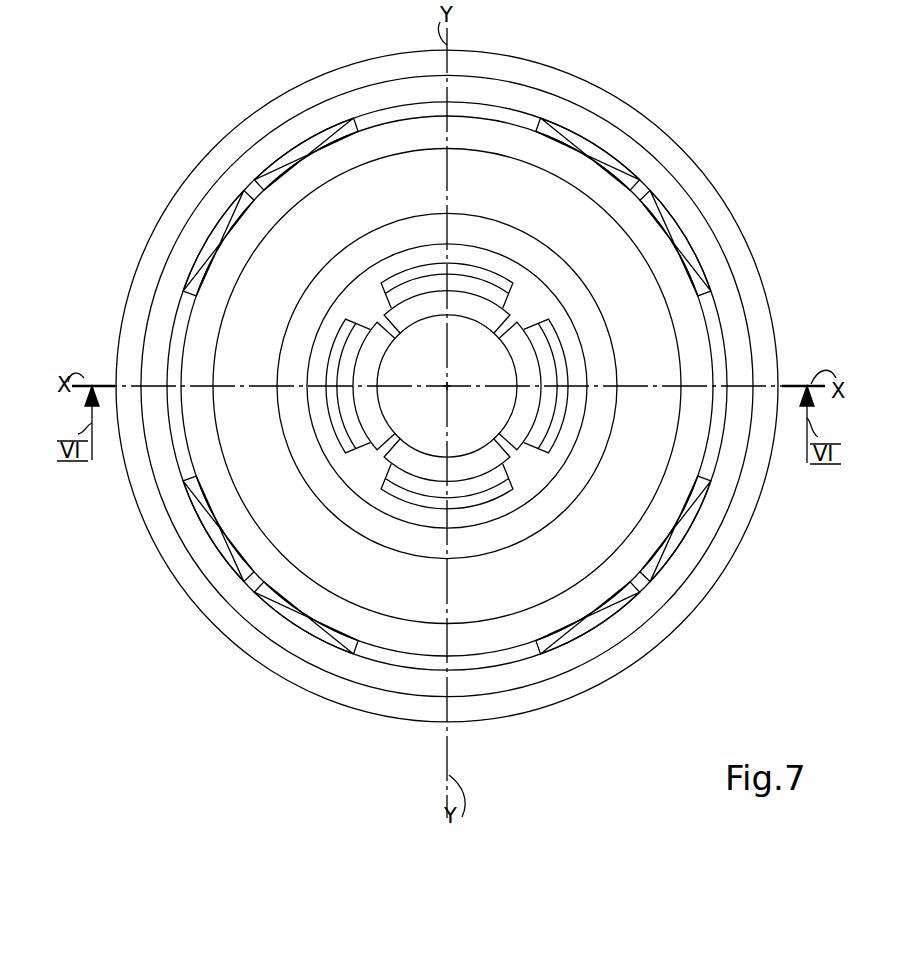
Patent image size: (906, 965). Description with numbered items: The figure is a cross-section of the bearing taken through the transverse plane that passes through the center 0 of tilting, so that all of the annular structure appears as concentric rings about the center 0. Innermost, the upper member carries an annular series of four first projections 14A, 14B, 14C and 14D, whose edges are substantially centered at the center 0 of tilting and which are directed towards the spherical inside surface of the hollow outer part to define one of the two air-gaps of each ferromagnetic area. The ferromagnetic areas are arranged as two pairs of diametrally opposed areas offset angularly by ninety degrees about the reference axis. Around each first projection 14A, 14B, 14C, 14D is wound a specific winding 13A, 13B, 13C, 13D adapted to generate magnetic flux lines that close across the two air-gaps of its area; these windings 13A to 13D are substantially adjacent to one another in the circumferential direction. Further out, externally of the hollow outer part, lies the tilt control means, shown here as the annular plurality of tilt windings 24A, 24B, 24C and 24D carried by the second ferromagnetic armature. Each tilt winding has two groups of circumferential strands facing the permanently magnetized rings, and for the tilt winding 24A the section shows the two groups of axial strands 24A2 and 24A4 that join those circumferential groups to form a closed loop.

The center of tilting 0 is at (448, 386).
The specific winding 13A is at (350, 418).
The specific winding 13B is at (535, 353).
The specific winding 13C is at (480, 292).
The specific winding 13D is at (422, 480).
The first projection 14A is at (337, 352).
The first projection 14B is at (558, 420).
The first projection 14C is at (408, 278).
The first projection 14D is at (493, 493).
The tilt winding 24A is at (170, 333).
The tilt winding 24B is at (730, 320).
The tilt winding 24C is at (522, 110).
The tilt winding 24D is at (492, 683).
The group of axial strands 24A2 is at (210, 230).
The group of axial strands 24A4 is at (210, 542).